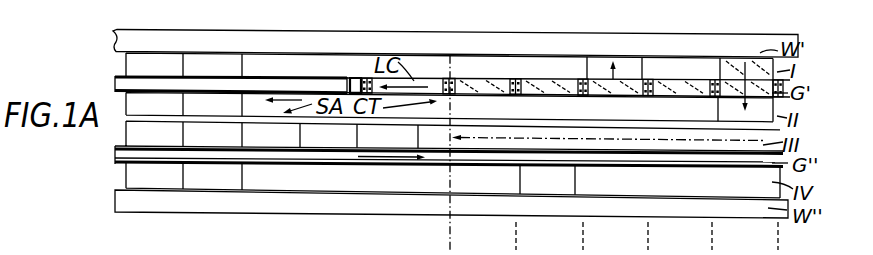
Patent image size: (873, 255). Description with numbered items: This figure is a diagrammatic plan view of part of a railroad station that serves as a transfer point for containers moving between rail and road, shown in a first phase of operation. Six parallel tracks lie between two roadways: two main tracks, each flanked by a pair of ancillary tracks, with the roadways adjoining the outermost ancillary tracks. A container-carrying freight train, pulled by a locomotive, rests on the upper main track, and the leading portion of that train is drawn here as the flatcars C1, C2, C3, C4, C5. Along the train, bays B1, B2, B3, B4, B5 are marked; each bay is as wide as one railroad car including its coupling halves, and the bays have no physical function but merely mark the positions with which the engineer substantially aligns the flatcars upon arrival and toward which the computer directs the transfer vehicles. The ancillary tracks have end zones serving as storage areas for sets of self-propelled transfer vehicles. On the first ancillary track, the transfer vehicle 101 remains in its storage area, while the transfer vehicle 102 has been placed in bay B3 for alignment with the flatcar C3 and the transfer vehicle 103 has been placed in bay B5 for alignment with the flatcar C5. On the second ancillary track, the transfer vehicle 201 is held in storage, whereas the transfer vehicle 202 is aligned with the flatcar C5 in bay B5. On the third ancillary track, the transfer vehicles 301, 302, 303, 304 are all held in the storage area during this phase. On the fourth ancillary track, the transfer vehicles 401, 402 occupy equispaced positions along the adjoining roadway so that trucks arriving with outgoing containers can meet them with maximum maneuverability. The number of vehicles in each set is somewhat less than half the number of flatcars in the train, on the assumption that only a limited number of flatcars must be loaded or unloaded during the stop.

The self-propelled transfer vehicle 101 is at (233, 74).
The self-propelled transfer vehicle 102 is at (595, 62).
The self-propelled transfer vehicle 103 is at (751, 62).
The self-propelled transfer vehicle 201 is at (233, 114).
The self-propelled transfer vehicle 202 is at (727, 114).
The self-propelled transfer vehicle 301 is at (233, 144).
The self-propelled transfer vehicle 302 is at (291, 144).
The self-propelled transfer vehicle 303 is at (348, 144).
The self-propelled transfer vehicle 304 is at (405, 144).
The self-propelled transfer vehicle 401 is at (233, 184).
The self-propelled transfer vehicle 402 is at (569, 188).
The flatcar C1 is at (467, 80).
The flatcar C2 is at (527, 83).
The flatcar C3 is at (640, 93).
The flatcar C4 is at (684, 86).
The flatcar C5 is at (737, 76).
The bay B1 is at (492, 248).
The bay B2 is at (566, 248).
The bay B3 is at (633, 248).
The bay B4 is at (695, 248).
The bay B5 is at (760, 248).